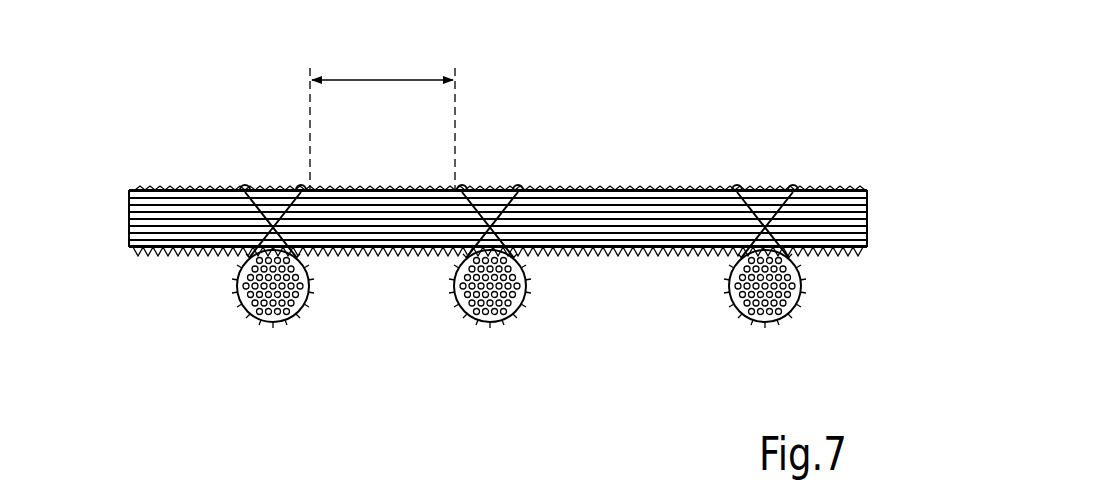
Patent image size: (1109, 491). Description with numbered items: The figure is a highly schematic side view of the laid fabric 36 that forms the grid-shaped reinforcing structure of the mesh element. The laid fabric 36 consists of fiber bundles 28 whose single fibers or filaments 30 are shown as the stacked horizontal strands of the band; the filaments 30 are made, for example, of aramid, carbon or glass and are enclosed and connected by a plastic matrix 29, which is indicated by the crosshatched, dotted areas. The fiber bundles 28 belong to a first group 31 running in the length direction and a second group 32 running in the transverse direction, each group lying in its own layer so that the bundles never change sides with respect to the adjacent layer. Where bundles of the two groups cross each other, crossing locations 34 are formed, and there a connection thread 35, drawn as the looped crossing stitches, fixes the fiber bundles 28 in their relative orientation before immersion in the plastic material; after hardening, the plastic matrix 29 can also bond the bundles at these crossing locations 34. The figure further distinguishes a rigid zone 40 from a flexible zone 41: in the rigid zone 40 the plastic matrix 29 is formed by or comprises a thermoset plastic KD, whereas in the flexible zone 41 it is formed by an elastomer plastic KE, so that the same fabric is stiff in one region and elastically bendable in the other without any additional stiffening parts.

The fiber bundle 28 is at (250, 322).
The plastic matrix 29 is at (242, 308).
The filaments 30 is at (130, 223).
The first group 31 is at (46, 196).
The second group 32 is at (160, 288).
The crossing location 34 is at (283, 160).
The connection thread 35 is at (253, 191).
The laid fabric 36 is at (900, 97).
The rigid zone 40 is at (188, 126).
The flexible zone 41 is at (375, 78).